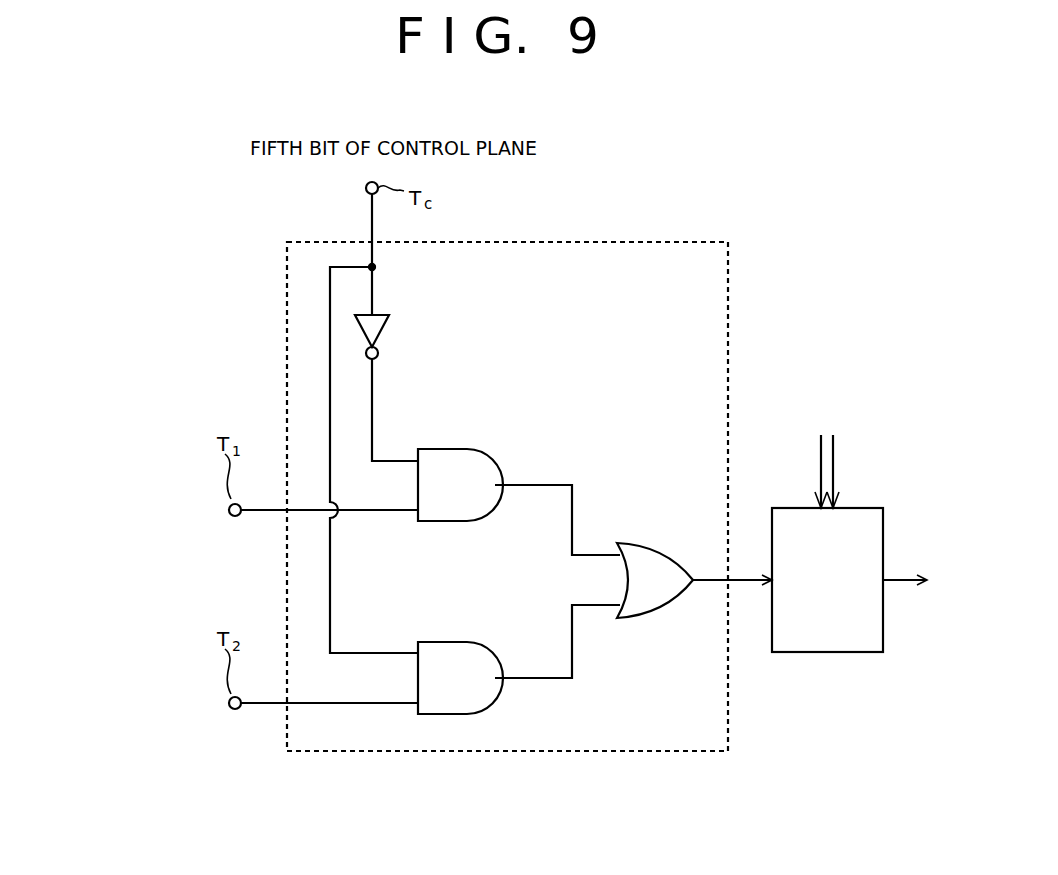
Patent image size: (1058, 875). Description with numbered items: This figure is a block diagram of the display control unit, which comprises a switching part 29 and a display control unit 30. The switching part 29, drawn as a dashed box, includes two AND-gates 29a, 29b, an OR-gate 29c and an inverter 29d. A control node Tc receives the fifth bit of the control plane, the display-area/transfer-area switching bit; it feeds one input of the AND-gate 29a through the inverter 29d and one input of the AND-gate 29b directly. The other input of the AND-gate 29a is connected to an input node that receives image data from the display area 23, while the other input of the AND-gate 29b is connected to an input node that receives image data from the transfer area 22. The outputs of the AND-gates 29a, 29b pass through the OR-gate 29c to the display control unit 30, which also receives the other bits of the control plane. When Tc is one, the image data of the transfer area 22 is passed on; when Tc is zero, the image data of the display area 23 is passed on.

The switching part 29 is at (440, 752).
The AND-gate 29a is at (440, 449).
The AND-gate 29b is at (440, 642).
The OR-gate 29c is at (640, 543).
The inverter 29d is at (380, 340).
The display control unit 30 is at (835, 652).
The display area 23 is at (225, 511).
The transfer area 22 is at (224, 705).